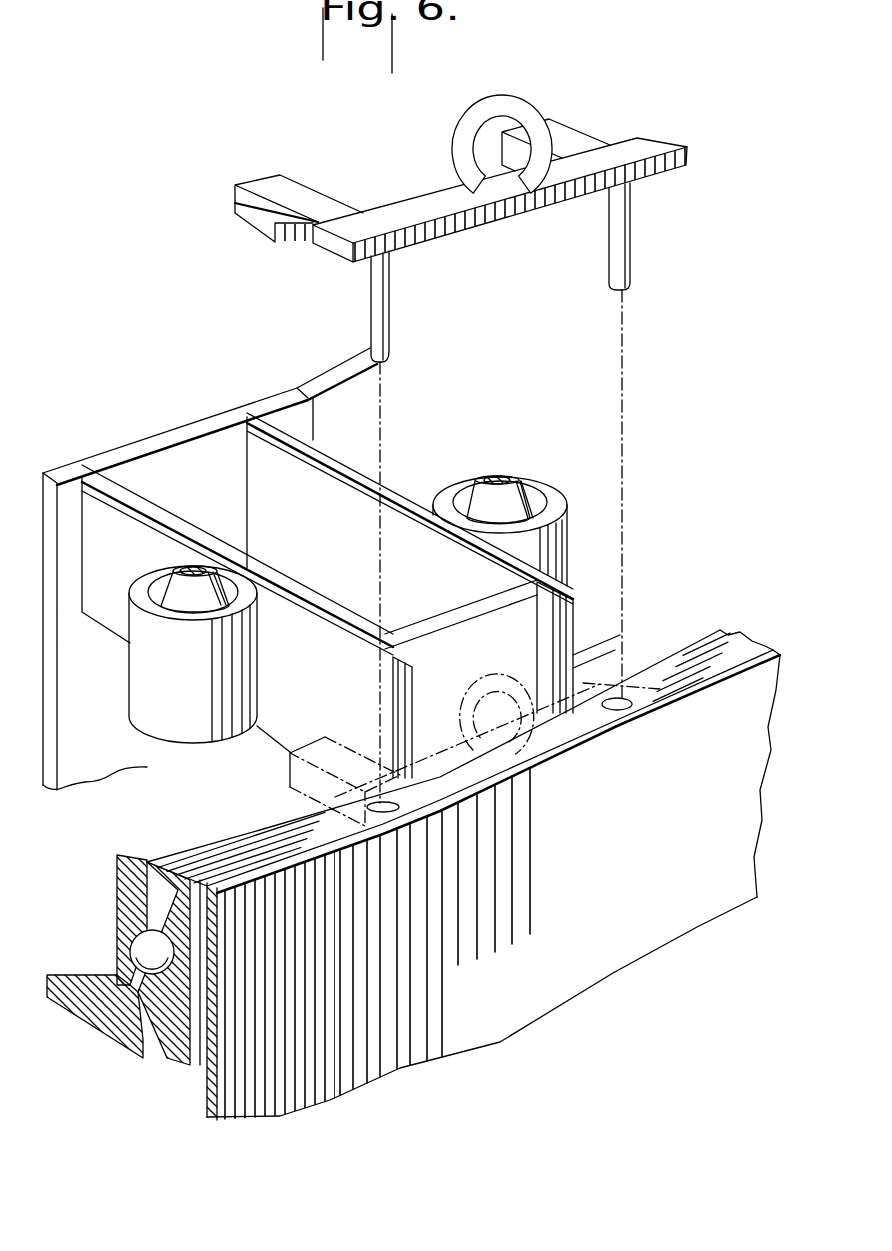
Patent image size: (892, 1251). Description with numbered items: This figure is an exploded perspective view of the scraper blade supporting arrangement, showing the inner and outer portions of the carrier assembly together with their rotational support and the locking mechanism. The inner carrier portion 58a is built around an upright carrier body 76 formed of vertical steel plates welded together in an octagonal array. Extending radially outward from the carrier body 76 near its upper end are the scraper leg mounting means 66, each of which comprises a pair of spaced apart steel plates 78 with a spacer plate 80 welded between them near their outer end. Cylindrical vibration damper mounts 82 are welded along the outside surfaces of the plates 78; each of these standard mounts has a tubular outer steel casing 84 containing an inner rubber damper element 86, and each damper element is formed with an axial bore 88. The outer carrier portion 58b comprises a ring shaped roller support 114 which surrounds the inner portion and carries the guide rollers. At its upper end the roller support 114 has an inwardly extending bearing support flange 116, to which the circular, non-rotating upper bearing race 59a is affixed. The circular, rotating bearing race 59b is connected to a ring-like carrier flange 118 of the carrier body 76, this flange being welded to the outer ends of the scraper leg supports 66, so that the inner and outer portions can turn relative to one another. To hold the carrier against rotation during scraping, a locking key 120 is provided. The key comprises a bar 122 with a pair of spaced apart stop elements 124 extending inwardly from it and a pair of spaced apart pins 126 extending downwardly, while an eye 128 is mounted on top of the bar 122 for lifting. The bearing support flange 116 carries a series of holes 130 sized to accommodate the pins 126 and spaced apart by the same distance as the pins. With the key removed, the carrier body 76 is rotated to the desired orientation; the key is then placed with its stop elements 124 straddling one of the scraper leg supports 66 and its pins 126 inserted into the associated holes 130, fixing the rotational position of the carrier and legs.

The inner carrier portion 58a is at (120, 420).
The outer carrier portion 58b is at (413, 850).
The upper bearing race 59a is at (116, 875).
The rotating bearing race 59b is at (178, 1060).
The scraper leg mounting means 66 is at (327, 595).
The carrier body 76 is at (212, 418).
The steel plates 78 is at (333, 460).
The spacer plate 80 is at (448, 615).
The vibration damper mounts 82 is at (132, 713).
The tubular outer steel casing 84 is at (145, 578).
The inner rubber damper element 86 is at (167, 572).
The axial bore 88 is at (207, 568).
The ring shaped roller support 114 is at (413, 877).
The bearing support flange 116 is at (227, 843).
The carrier flange 118 is at (93, 1023).
The locking key 120 is at (482, 438).
The bar 122 is at (448, 228).
The stop elements 124 is at (300, 190).
The pins 126 is at (630, 253).
The eye 128 is at (472, 118).
The holes 130 is at (375, 803).